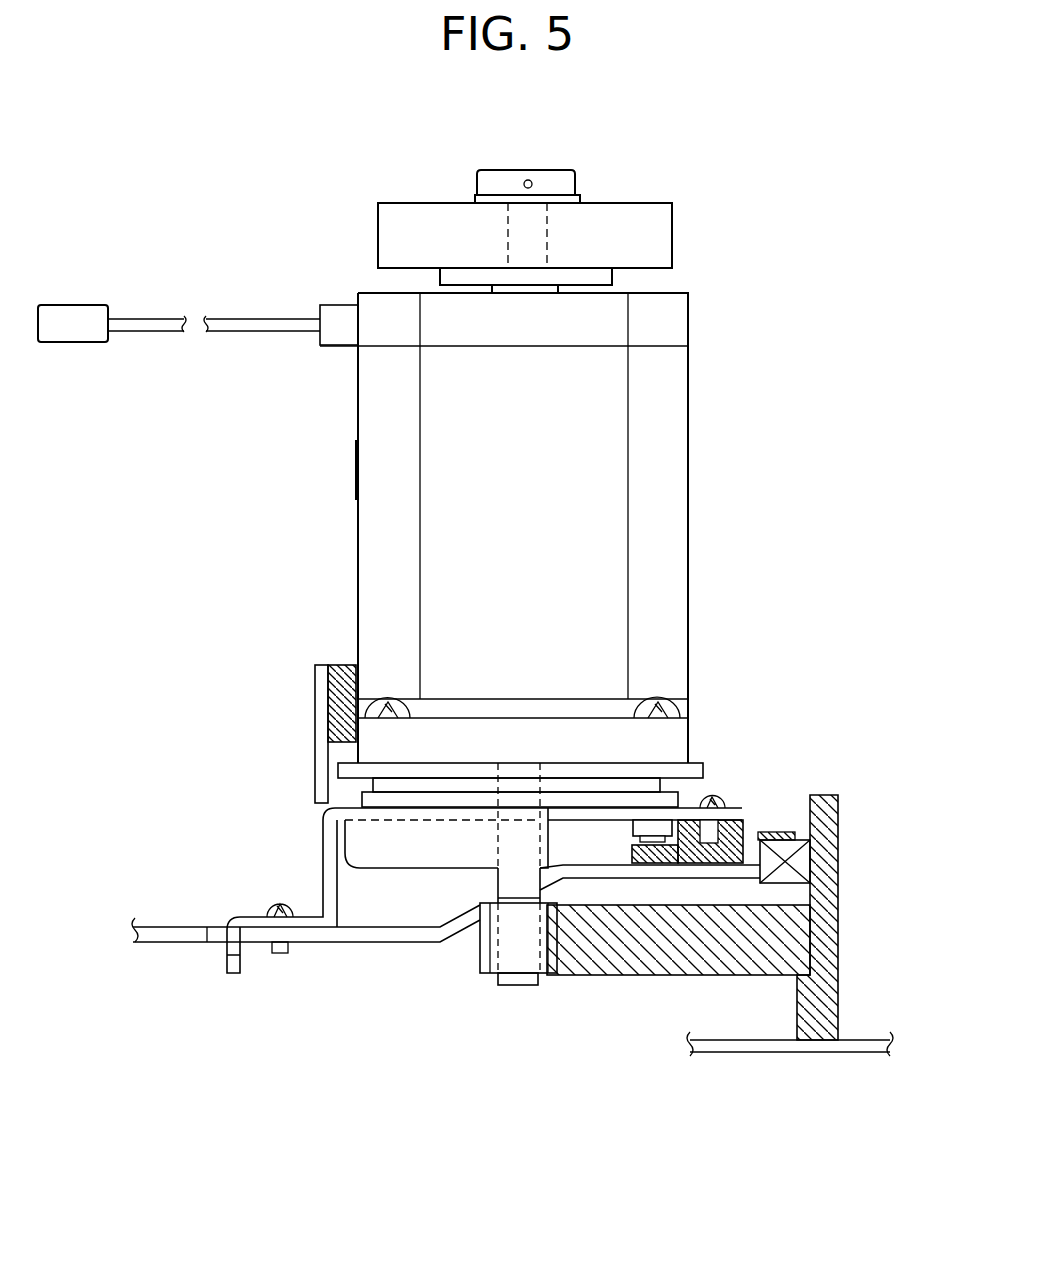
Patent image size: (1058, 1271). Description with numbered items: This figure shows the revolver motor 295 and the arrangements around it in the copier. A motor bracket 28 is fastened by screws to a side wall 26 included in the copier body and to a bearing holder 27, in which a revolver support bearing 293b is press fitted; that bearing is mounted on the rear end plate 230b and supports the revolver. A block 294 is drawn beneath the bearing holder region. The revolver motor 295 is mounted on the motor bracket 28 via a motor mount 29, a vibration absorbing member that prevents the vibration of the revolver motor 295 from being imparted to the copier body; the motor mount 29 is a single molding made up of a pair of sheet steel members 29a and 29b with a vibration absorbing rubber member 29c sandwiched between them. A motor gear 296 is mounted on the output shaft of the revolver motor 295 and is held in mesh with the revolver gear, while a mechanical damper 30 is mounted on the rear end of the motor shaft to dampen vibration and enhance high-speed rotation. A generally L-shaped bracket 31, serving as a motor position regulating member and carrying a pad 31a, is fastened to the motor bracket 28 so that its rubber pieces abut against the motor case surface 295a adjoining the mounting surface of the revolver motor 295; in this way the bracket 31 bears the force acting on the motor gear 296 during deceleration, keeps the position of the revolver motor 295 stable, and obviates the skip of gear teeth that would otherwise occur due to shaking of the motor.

The side wall 26 is at (168, 927).
The bearing holder 27 is at (770, 838).
The motor bracket 28 is at (316, 811).
The motor mount 29 is at (607, 751).
The sheet steel member 29a is at (703, 777).
The sheet steel member 29b is at (678, 802).
The vibration absorbing rubber member 29c is at (660, 786).
The mechanical damper 30 is at (672, 238).
The bracket 31 is at (316, 665).
The bracket pad 31a is at (343, 665).
The rear end plate 230b is at (852, 1052).
The revolver support bearing 293b is at (800, 835).
The base block 294 is at (640, 975).
The revolver motor 295 is at (655, 462).
The motor case surface 295a is at (356, 465).
The motor gear 296 is at (480, 968).